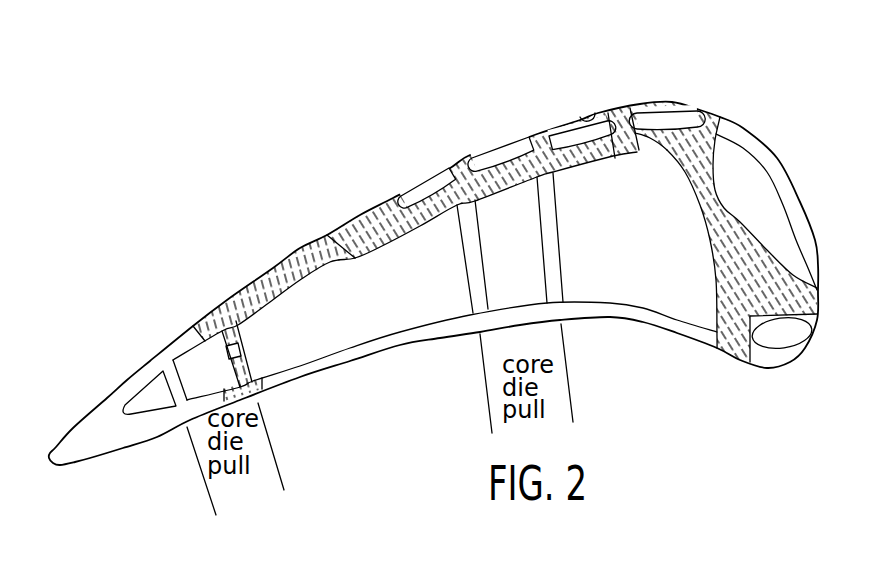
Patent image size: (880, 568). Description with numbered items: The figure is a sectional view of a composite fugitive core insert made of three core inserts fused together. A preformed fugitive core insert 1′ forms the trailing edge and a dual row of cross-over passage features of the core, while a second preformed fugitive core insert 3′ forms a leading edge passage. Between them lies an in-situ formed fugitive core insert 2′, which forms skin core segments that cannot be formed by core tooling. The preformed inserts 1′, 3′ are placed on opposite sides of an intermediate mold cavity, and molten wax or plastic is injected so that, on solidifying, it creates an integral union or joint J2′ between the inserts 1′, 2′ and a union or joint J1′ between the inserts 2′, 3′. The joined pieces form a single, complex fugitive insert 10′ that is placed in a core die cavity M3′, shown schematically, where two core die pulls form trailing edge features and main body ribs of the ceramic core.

The preformed fugitive core insert 1′ is at (223, 304).
The in-situ formed fugitive core insert 2′ is at (533, 128).
The preformed fugitive core insert 3′ is at (730, 206).
The complex fugitive insert 10′ is at (337, 222).
The union or joint J1′ is at (626, 157).
The union or joint J2′ is at (357, 259).
The core die cavity M3′ is at (590, 113).